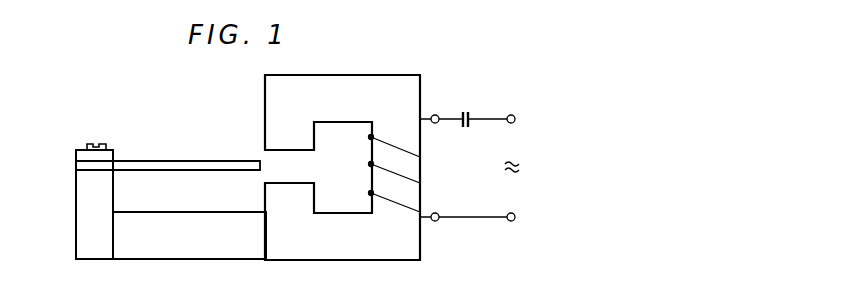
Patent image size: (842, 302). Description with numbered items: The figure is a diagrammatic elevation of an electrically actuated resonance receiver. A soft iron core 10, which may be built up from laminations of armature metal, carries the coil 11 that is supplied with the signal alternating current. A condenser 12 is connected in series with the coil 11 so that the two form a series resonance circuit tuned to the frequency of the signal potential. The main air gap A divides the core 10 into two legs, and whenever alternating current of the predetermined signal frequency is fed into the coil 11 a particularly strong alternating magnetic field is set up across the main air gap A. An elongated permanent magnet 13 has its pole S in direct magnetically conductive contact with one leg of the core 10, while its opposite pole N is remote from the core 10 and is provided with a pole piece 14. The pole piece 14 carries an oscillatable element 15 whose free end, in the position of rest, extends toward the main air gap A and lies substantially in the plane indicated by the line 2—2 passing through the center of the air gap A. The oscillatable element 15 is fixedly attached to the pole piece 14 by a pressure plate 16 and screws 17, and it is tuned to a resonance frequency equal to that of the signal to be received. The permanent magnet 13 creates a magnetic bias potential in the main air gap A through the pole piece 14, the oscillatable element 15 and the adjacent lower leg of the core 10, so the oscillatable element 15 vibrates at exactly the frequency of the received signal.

The soft iron core 10 is at (265, 103).
The coil 11 is at (420, 183).
The condenser 12 is at (469, 113).
The permanent magnet 13 is at (160, 250).
The pole piece 14 is at (84, 241).
The oscillatable element 15 is at (201, 142).
The pressure plate 16 is at (113, 150).
The screws 17 is at (89, 144).
The main air gap A is at (276, 158).
The line 2— 2 is at (48, 141).